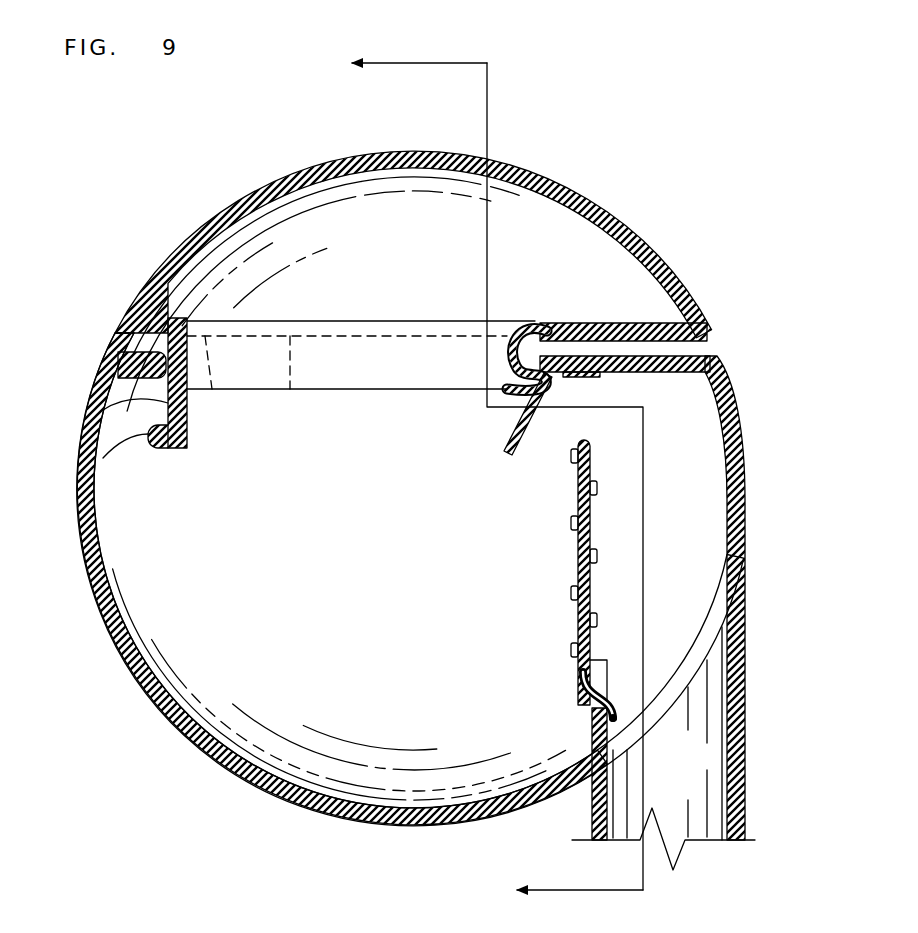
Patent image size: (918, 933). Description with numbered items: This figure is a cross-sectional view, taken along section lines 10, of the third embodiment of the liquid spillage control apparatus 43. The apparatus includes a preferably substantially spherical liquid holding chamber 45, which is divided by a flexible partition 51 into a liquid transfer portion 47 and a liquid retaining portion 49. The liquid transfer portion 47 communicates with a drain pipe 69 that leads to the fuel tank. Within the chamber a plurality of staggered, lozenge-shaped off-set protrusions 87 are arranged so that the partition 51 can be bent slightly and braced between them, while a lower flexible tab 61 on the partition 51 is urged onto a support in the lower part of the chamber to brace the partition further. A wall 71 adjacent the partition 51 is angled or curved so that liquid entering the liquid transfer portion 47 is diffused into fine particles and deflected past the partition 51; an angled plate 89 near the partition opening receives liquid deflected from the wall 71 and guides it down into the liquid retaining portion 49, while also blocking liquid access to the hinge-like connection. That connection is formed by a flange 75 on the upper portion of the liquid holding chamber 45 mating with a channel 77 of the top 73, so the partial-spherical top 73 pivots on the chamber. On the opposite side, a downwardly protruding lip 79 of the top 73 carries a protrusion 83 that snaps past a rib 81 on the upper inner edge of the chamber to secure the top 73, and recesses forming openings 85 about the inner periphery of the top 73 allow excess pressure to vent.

The section line 10- 10 is at (477, 477).
The liquid spillage control apparatus 43 is at (118, 716).
The liquid holding chamber 45 is at (300, 810).
The liquid transfer portion 47 is at (710, 452).
The liquid retaining portion 49 is at (130, 572).
The partition 51 is at (575, 600).
The lower flexible tab 61 is at (618, 713).
The drain pipe 69 is at (725, 800).
The wall 71 is at (725, 383).
The top 73 is at (392, 149).
The flange 75 is at (510, 338).
The channel 77 is at (638, 350).
The lip 79 is at (90, 418).
The rib 81 is at (105, 352).
The protrusion 83 is at (100, 455).
The openings 85 is at (255, 355).
The off-set protrusions 87 is at (597, 555).
The plate 89 is at (510, 442).